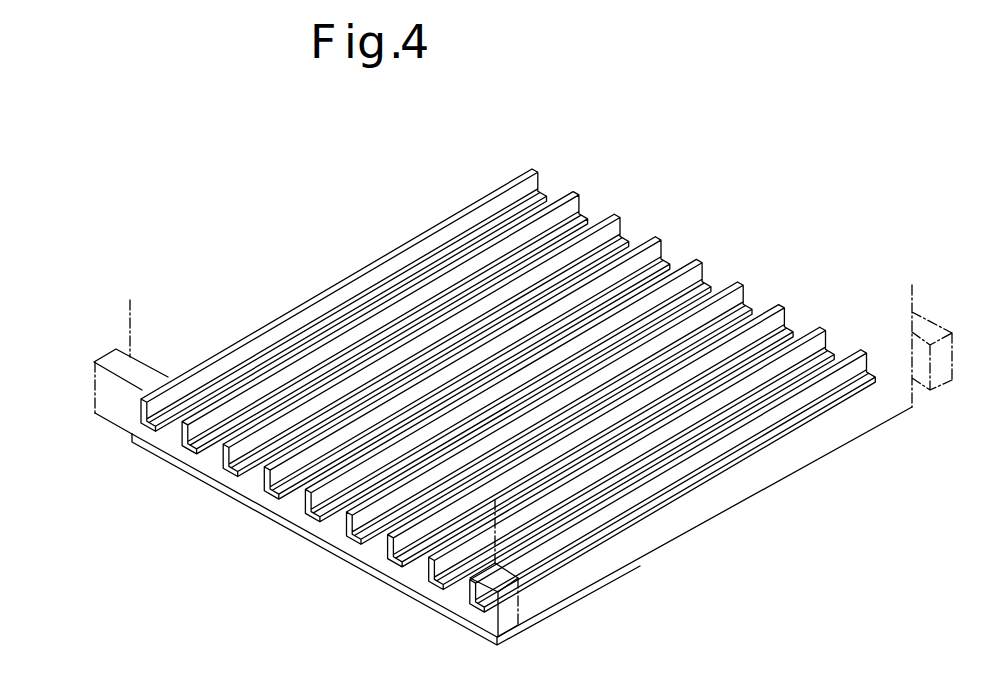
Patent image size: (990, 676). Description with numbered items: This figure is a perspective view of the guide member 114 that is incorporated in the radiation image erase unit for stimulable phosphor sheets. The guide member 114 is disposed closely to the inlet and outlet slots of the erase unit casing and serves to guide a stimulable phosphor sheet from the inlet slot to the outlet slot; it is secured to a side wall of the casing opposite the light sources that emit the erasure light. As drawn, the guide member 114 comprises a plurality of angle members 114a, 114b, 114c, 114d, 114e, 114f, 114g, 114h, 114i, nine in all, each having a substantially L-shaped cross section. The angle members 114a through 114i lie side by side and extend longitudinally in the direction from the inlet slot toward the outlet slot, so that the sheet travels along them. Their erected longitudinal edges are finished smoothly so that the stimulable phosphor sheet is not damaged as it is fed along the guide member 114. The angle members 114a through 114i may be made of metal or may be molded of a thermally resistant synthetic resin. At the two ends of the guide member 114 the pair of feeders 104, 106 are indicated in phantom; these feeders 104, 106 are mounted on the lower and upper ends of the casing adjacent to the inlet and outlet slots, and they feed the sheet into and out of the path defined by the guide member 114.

The feeder 104 is at (940, 388).
The feeder 106 is at (118, 406).
The guide member 114 is at (740, 474).
The angle member 114a is at (862, 352).
The angle member 114b is at (826, 330).
The angle member 114c is at (782, 305).
The angle member 114d is at (742, 284).
The angle member 114e is at (703, 262).
The angle member 114f is at (660, 240).
The angle member 114g is at (617, 215).
The angle member 114h is at (577, 192).
The angle member 114i is at (488, 196).